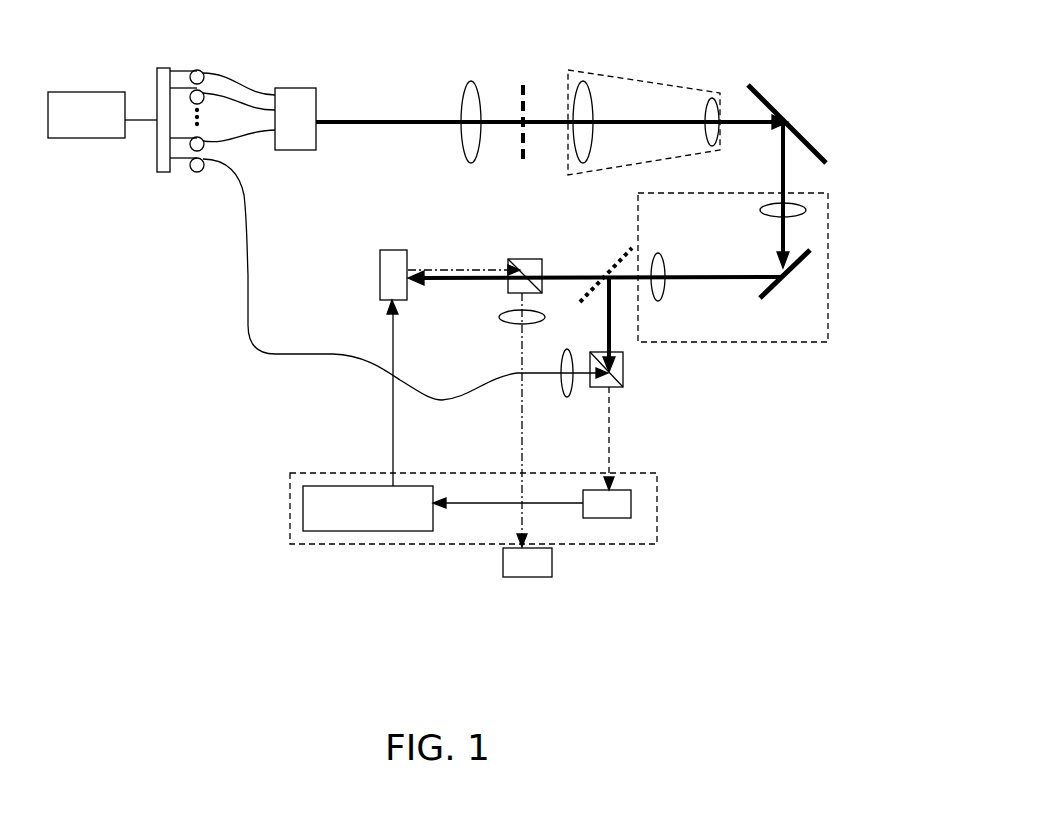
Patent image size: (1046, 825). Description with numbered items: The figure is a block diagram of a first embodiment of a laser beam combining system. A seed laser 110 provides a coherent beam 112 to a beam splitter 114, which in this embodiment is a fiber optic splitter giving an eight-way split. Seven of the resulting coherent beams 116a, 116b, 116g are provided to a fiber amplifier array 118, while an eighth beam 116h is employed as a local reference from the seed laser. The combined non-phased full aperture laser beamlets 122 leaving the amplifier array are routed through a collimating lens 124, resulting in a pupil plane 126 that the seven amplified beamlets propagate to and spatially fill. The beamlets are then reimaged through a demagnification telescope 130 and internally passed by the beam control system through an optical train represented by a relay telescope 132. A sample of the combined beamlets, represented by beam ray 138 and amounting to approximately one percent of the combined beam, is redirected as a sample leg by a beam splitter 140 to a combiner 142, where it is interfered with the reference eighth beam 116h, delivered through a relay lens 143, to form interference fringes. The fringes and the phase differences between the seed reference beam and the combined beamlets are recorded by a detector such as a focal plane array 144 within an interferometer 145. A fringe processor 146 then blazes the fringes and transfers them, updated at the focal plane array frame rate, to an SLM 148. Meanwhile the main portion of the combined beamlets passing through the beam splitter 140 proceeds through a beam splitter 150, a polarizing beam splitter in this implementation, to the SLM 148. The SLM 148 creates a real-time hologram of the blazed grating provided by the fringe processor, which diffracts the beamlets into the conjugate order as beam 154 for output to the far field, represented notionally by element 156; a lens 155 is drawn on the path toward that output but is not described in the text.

The seed laser 110 is at (64, 92).
The coherent beam 112 is at (147, 118).
The beam splitter 114 is at (221, 100).
The coherent beam 116a is at (229, 75).
The coherent beam 116b is at (231, 95).
The coherent beam 116g is at (225, 140).
The eighth beam 116h is at (248, 263).
The fiber amplifier array 118 is at (293, 88).
The combined non-phased full aperture laser beamlets 122 is at (348, 121).
The collimating lens 124 is at (457, 110).
The pupil plane 126 is at (527, 93).
The demagnification telescope 130 is at (625, 165).
The relay telescope 132 is at (829, 283).
The beam ray 138 is at (609, 317).
The beam splitter 140 is at (623, 256).
The combiner 142 is at (623, 367).
The relay lens 143 is at (567, 350).
The focal plane array 144 is at (631, 500).
The interferometer 145 is at (642, 544).
The fringe processor 146 is at (303, 502).
The SLM 148 is at (393, 250).
The beam splitter 150 is at (508, 292).
The beam 154 is at (428, 268).
The lens 155 is at (503, 323).
The element 156 is at (503, 552).